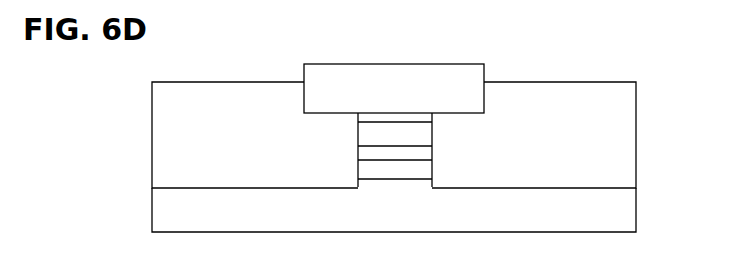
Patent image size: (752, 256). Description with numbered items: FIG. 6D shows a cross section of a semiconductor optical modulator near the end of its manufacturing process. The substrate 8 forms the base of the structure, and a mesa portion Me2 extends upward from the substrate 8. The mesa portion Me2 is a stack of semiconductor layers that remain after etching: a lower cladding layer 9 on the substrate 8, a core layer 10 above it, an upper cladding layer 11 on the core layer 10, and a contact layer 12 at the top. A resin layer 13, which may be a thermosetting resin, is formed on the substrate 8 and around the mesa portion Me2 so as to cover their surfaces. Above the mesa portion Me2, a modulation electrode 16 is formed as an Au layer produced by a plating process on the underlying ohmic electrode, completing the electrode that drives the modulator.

The modulation electrode 16 is at (349, 77).
The contact layer 12 is at (417, 118).
The cladding layer 11 is at (422, 128).
The core layer 10 is at (422, 150).
The cladding layer 9 is at (422, 167).
The resin layer 13 is at (620, 107).
The substrate 8 is at (620, 203).
The mesa portion Me2 is at (399, 105).